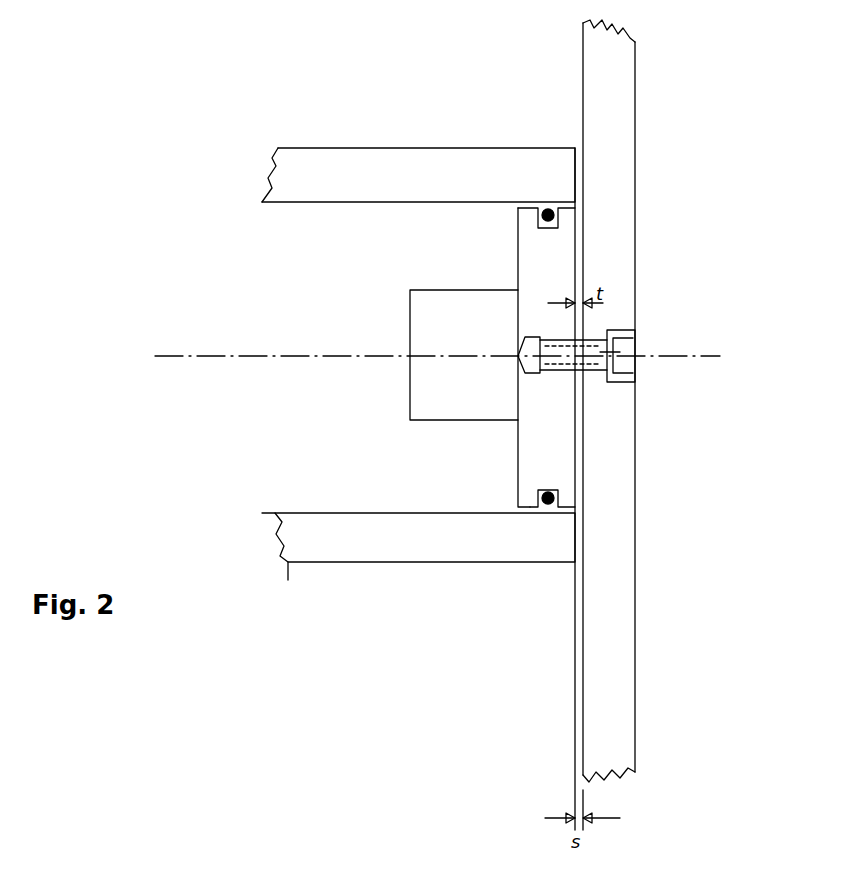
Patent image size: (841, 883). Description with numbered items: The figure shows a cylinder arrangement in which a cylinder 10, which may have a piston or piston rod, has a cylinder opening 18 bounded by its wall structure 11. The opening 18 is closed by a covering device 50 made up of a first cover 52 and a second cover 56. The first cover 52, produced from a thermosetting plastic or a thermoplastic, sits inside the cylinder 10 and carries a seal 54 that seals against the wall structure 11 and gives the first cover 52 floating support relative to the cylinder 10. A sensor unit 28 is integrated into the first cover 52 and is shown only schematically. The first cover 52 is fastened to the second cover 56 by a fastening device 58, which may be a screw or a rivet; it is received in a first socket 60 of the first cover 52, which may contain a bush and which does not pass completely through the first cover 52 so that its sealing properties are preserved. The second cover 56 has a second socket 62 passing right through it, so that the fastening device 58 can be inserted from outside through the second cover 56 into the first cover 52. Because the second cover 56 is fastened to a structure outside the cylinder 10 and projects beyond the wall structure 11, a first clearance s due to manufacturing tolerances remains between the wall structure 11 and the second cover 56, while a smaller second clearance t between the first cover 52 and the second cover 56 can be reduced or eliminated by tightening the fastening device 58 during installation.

The cylinder 10 is at (343, 130).
The wall structure 11 is at (386, 544).
The cylinder opening 18 is at (510, 484).
The sensor unit 28 is at (428, 382).
The covering device 50 is at (590, 198).
The first cover 52 is at (546, 270).
The seal 54 is at (548, 512).
The second cover 56 is at (622, 495).
The fastening device 58 is at (620, 355).
The first socket 60 is at (545, 378).
The second socket 62 is at (634, 332).